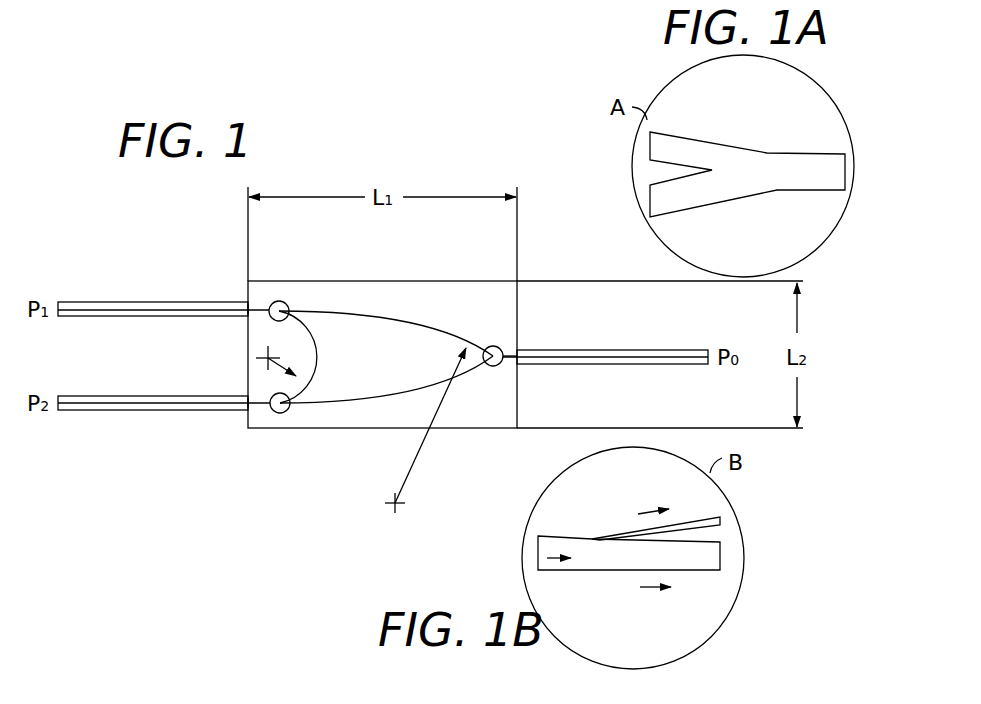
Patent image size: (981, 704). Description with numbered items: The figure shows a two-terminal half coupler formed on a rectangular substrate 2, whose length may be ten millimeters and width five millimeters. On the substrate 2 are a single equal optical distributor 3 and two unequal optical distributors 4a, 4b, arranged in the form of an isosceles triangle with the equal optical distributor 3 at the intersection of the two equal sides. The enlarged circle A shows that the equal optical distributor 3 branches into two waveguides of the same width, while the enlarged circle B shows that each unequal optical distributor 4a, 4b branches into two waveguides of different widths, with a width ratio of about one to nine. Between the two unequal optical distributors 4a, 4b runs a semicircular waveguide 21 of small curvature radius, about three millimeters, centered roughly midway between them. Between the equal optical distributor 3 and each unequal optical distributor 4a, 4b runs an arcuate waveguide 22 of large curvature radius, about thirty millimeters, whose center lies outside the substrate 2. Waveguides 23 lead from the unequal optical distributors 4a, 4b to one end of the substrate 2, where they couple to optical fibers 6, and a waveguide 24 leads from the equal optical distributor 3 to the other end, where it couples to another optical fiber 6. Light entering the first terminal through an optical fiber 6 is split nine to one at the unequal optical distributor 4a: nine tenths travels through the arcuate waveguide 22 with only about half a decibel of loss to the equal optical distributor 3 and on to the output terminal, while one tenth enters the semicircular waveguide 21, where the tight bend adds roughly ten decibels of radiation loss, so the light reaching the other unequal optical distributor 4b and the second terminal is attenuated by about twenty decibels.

In FIG. 1, the substrate 2 is at (352, 287).
In FIG. 1, the 1×2 equal optical distributor 3 is at (503, 366).
In FIG. 1, the 1×2 unequal optical distributor 4a is at (285, 302).
In FIG. 1, the 1×2 unequal optical distributor 4b is at (275, 413).
In FIG. 1, the optical fiber 6 is at (188, 302).
In FIG. 1, the semicircular waveguide 21 is at (314, 364).
In FIG. 1B, the semicircular waveguide 21 is at (683, 521).
In FIG. 1, the arcuate waveguide 22 is at (403, 323).
In FIG. 1B, the arcuate waveguide 22 is at (688, 572).
In FIG. 1, the waveguide 23 is at (256, 306).
In FIG. 1, the waveguide 24 is at (512, 353).